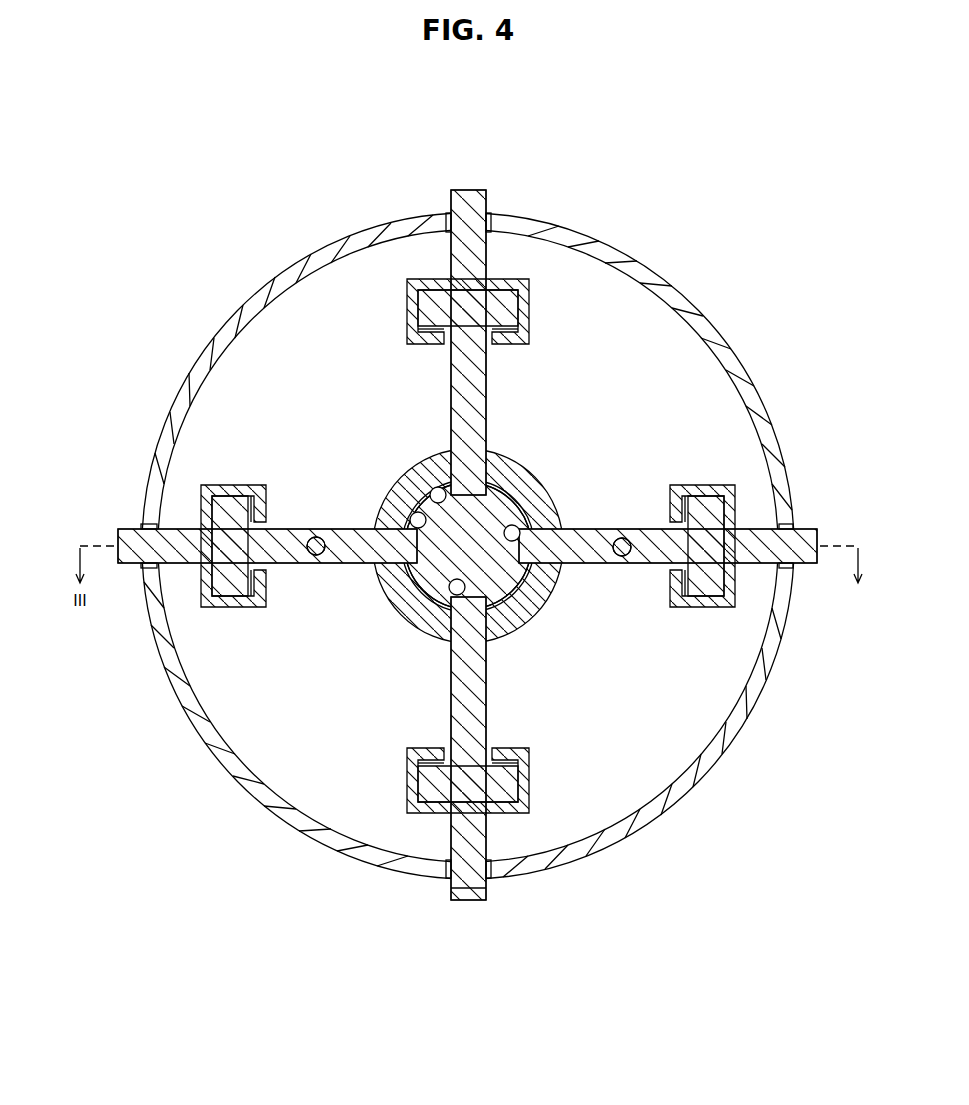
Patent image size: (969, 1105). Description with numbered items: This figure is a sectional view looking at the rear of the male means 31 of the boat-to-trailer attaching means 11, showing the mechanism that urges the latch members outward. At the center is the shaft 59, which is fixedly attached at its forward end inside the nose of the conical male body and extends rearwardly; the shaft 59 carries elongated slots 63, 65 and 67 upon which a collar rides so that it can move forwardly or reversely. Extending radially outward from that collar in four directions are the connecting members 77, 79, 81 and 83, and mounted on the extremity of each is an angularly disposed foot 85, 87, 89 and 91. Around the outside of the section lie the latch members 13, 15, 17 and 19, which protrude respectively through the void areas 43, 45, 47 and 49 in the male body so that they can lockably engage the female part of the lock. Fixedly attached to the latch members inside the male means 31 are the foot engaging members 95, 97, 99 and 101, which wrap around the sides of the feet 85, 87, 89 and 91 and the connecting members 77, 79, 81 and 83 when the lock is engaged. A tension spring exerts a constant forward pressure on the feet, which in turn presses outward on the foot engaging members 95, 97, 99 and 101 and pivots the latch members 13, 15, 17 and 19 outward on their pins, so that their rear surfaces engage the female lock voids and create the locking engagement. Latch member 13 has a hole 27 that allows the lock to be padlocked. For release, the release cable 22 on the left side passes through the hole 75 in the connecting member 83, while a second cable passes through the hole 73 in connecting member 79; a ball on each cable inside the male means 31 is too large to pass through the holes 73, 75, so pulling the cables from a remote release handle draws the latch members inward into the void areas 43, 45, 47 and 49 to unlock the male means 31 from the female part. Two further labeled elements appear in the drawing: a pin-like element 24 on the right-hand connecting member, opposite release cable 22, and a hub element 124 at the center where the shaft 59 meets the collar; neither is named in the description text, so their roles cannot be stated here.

The means for attaching a boat to a trailer 11 is at (468, 546).
The latch member 13 is at (510, 771).
The latch member 15 is at (696, 567).
The latch member 17 is at (491, 333).
The latch member 19 is at (245, 549).
The release cable 22 is at (317, 537).
The pin 24 is at (622, 538).
The hole 27 is at (478, 886).
The male means 31 is at (205, 748).
The void area 43 is at (491, 862).
The void area 45 is at (792, 526).
The void area 47 is at (448, 214).
The void area 49 is at (143, 526).
The shaft 59 is at (500, 500).
The elongated slot 63 is at (530, 522).
The elongated slot 65 is at (437, 487).
The elongated slot 67 is at (412, 515).
The hole 73 is at (668, 580).
The hole 75 is at (325, 565).
The connecting member 77 is at (487, 692).
The connecting member 79 is at (655, 567).
The connecting member 81 is at (487, 374).
The connecting member 83 is at (267, 580).
The foot 85 is at (442, 760).
The foot 87 is at (673, 520).
The foot 89 is at (518, 302).
The foot 91 is at (236, 503).
The foot engaging member 95 is at (478, 761).
The foot engaging member 97 is at (672, 562).
The foot engaging member 99 is at (467, 322).
The foot engaging member 101 is at (257, 545).
The hub 124 is at (487, 546).